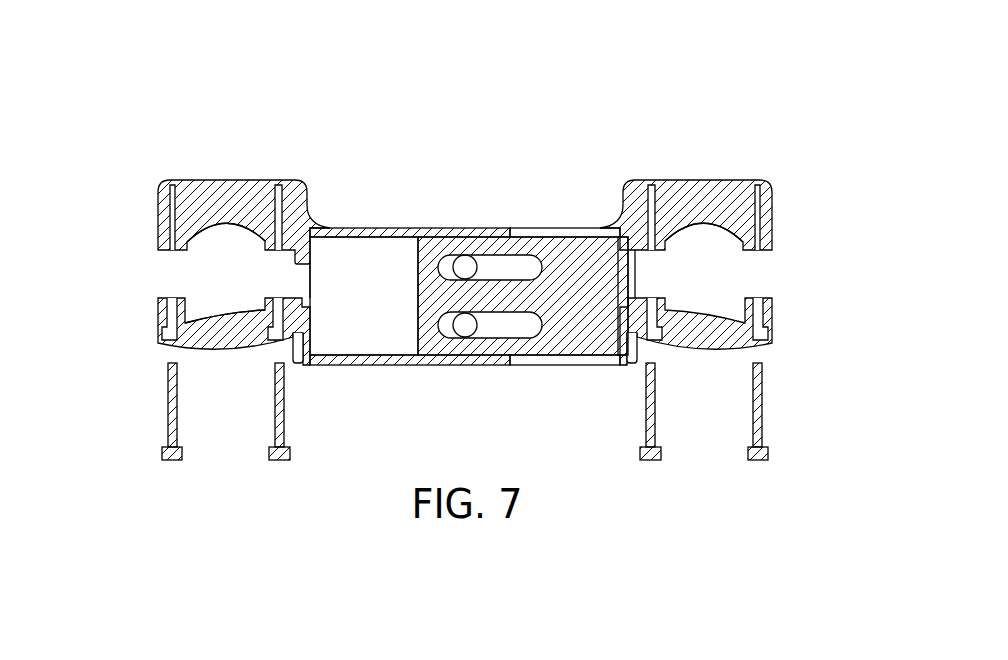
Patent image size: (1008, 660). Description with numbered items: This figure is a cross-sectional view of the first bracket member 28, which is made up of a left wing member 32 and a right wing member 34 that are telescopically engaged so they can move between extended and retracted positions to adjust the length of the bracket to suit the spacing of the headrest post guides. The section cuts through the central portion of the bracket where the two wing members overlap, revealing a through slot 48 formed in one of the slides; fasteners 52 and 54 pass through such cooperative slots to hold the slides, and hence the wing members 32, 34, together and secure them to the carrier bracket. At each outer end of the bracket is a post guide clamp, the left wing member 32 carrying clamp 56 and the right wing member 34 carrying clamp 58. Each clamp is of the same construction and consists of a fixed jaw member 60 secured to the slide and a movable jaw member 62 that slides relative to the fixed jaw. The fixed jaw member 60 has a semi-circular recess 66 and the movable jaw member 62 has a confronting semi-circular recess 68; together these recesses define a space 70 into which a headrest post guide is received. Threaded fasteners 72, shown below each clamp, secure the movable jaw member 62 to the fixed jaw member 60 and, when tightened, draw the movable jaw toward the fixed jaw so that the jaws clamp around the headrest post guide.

The first bracket member 28 is at (448, 235).
The left wing member 32 is at (350, 218).
The right wing member 34 is at (633, 170).
The through slot 48 is at (541, 330).
The fastener 52 is at (465, 328).
The fastener 54 is at (463, 265).
The post guide clamp 56 is at (175, 181).
The post guide clamp 58 is at (772, 190).
The fixed jaw member 60 is at (218, 182).
The movable jaw member 62 is at (222, 350).
The semi-circular recess 66 is at (228, 223).
The semi-circular recess 68 is at (228, 323).
The space 70 is at (207, 267).
The threaded fastener 72 is at (168, 415).